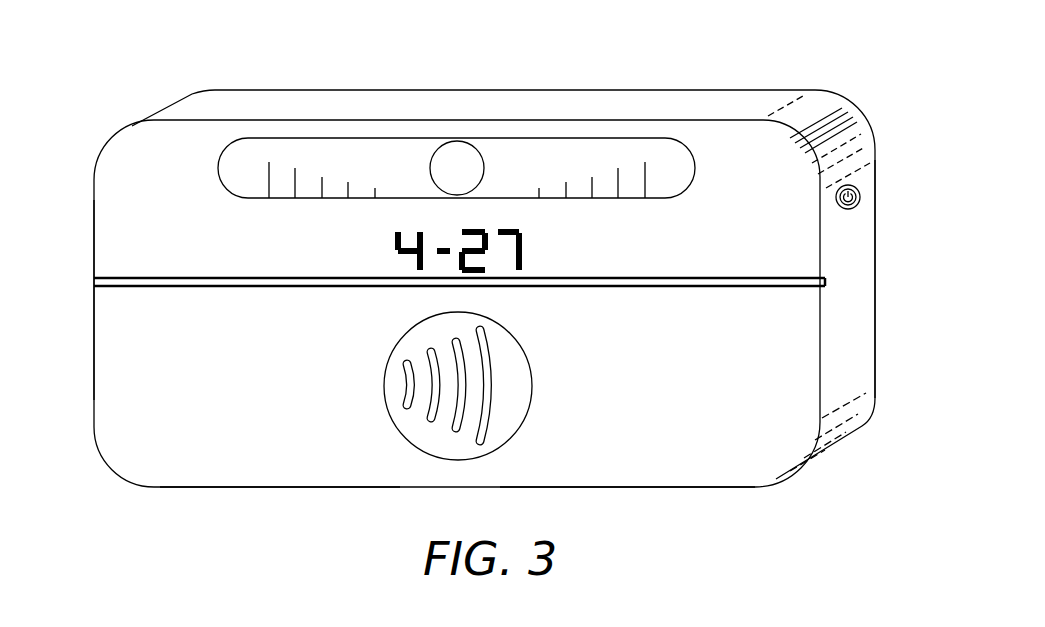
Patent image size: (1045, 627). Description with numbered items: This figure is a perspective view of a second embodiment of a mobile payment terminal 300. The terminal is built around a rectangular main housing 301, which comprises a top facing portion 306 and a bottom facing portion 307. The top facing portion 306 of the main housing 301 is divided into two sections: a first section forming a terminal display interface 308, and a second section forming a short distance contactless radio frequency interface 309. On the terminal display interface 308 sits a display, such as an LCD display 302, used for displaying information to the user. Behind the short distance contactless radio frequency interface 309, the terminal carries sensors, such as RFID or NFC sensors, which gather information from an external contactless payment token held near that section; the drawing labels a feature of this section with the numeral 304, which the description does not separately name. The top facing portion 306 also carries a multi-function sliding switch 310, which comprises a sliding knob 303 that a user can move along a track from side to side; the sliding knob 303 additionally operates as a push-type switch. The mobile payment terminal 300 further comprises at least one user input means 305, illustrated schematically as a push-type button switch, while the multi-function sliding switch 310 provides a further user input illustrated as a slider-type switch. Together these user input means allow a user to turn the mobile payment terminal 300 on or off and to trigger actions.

The mobile payment terminal 300 is at (205, 61).
The main housing 301 is at (115, 470).
The LCD display 302 is at (277, 213).
The sliding knob 303 is at (430, 168).
The speaker grille 304 is at (496, 427).
The user input means 305 is at (861, 197).
The top facing portion 306 is at (703, 472).
The bottom facing portion 307 is at (875, 383).
The terminal display interface 308 is at (94, 232).
The short distance contactless radio frequency interface 309 is at (297, 475).
The multi-function sliding switch 310 is at (695, 168).